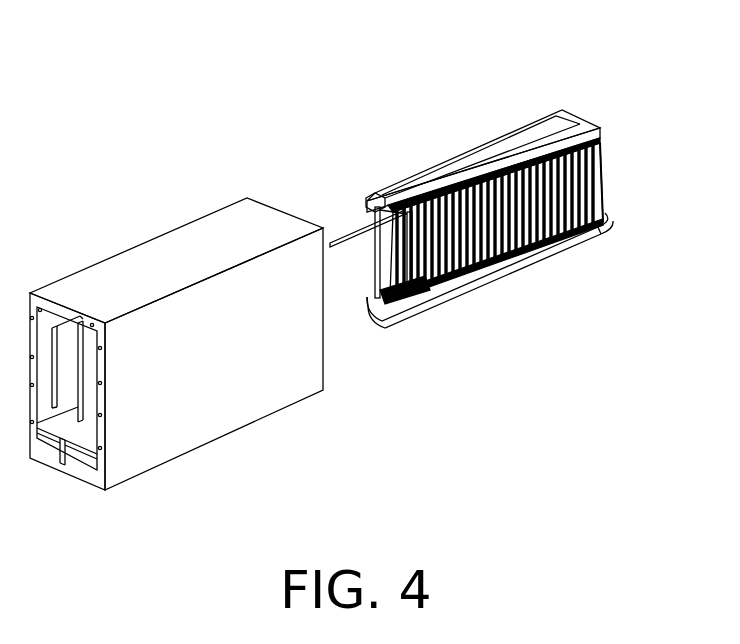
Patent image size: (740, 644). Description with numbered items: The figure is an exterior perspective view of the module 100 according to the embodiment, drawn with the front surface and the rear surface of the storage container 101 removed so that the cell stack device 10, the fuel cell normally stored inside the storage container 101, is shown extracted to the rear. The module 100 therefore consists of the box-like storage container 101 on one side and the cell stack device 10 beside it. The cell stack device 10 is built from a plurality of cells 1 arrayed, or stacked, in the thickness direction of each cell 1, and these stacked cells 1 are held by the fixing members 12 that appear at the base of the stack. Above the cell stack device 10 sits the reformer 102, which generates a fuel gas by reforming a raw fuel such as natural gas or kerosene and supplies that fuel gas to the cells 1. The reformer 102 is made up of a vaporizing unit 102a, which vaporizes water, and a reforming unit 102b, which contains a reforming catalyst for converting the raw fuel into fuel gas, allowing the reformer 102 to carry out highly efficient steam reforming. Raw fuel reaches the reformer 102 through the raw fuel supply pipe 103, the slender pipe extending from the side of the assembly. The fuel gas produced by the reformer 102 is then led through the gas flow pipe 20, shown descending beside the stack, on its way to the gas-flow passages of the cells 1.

The module 100 is at (158, 84).
The storage container 101 is at (187, 248).
The reformer 102 is at (492, 65).
The vaporizing unit 102a is at (450, 165).
The reforming unit 102b is at (497, 143).
The raw fuel supply pipe 103 is at (352, 232).
The cell stack device 10 is at (622, 154).
The cell 1 is at (603, 190).
The fixing member 12 is at (536, 278).
The gas flow pipe 20 is at (372, 253).